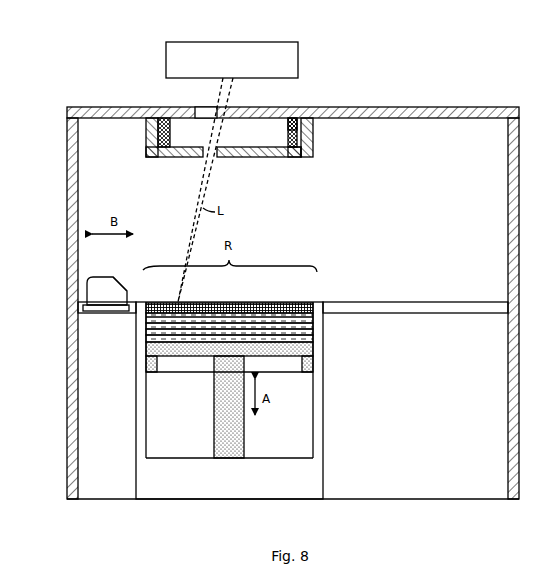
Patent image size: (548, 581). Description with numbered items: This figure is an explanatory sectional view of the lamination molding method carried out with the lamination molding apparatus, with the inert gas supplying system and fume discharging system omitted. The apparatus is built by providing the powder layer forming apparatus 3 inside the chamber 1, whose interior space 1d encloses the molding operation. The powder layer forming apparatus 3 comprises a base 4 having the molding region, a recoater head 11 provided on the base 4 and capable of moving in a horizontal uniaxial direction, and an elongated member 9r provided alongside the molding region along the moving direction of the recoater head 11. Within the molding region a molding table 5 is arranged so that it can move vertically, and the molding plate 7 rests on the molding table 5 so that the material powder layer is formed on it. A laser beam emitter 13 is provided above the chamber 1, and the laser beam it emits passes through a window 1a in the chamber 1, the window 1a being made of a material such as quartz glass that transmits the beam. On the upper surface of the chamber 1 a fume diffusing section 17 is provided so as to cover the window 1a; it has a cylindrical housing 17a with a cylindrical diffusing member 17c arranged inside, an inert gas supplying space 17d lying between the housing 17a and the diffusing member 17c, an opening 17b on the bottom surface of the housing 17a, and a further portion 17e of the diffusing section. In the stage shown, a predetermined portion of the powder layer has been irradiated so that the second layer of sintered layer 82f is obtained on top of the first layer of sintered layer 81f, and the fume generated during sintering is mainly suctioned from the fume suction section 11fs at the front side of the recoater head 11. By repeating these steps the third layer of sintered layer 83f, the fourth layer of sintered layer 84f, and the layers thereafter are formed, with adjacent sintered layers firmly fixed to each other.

The chamber 1 is at (104, 107).
The window 1a is at (206, 108).
The processing space 1d is at (332, 237).
The powder layer forming apparatus 3 is at (426, 296).
The base 4 is at (100, 362).
The molding table 5 is at (320, 348).
The molding plate 7 is at (315, 343).
The elongated member 9r is at (268, 302).
The recoater head 11 is at (104, 277).
The fume suction section 11fs is at (128, 294).
The laser beam emitter 13 is at (283, 42).
The fume diffusing section 17 is at (263, 149).
The housing 17a is at (313, 130).
The opening 17b is at (247, 160).
The diffusing member 17c is at (288, 135).
The inert gas supplying space 17d is at (298, 158).
The upper portion of inner wall 17e is at (286, 126).
The first layer of sintered layer 81f is at (323, 337).
The second layer of sintered layer 82f is at (323, 331).
The third layer of sintered layer 83f is at (323, 326).
The fourth layer of sintered layer 84f is at (313, 320).